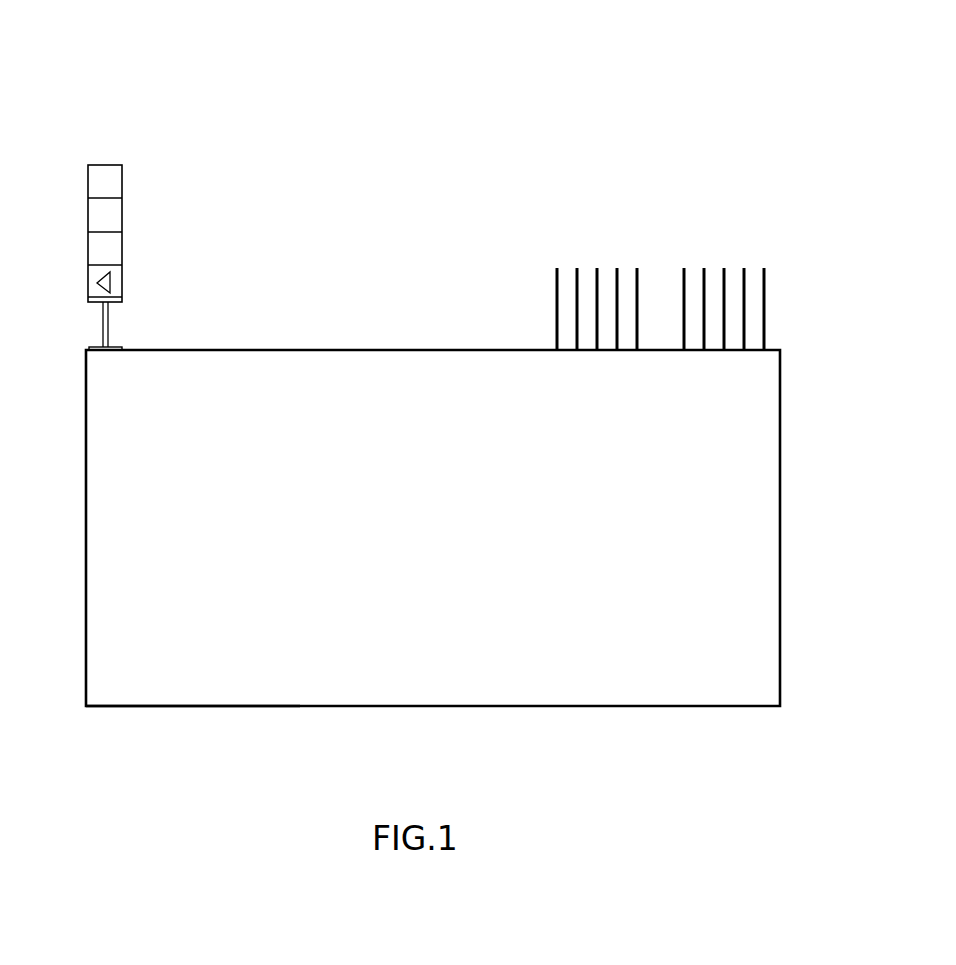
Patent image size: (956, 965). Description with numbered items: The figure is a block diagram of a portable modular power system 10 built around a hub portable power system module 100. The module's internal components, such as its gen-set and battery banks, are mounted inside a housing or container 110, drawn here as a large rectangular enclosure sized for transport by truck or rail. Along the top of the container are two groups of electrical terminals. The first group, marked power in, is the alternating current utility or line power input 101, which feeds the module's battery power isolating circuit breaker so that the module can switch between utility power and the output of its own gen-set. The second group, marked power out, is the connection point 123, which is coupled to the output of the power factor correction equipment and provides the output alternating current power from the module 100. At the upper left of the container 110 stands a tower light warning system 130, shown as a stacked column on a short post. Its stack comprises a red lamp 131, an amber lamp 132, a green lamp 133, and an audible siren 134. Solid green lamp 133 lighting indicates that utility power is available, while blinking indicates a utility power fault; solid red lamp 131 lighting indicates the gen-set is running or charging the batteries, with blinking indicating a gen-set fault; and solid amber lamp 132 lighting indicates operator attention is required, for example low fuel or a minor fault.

The portable modular power system 10 is at (140, 44).
The hub portable power system module 100 is at (628, 687).
The housing or container 110 is at (163, 685).
The tower light warning system 130 is at (150, 223).
The red lamp 131 is at (122, 180).
The amber lamp 132 is at (122, 218).
The green lamp 133 is at (122, 242).
The audible siren 134 is at (122, 280).
The alternating current utility power input 101 is at (597, 190).
The connection point 123 is at (730, 190).